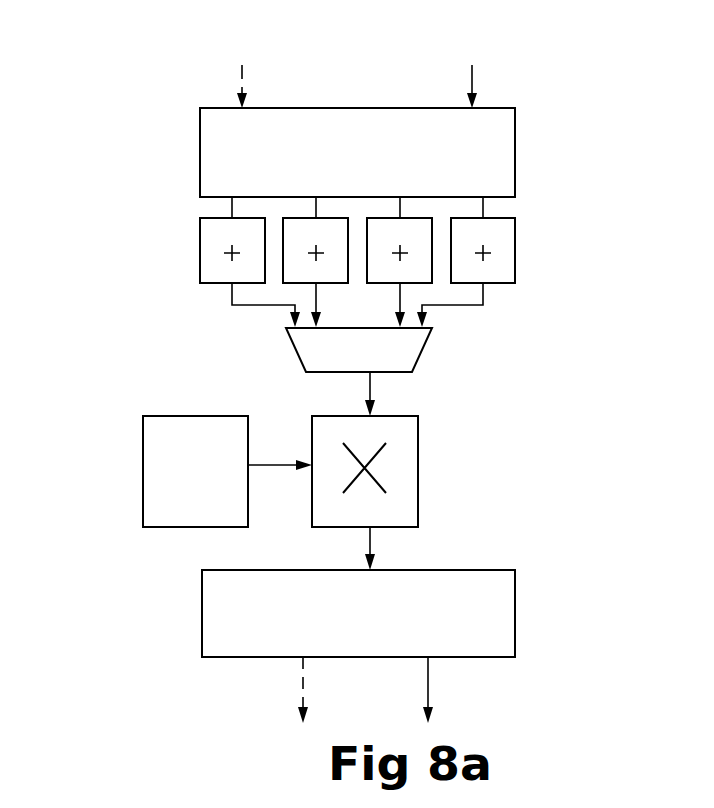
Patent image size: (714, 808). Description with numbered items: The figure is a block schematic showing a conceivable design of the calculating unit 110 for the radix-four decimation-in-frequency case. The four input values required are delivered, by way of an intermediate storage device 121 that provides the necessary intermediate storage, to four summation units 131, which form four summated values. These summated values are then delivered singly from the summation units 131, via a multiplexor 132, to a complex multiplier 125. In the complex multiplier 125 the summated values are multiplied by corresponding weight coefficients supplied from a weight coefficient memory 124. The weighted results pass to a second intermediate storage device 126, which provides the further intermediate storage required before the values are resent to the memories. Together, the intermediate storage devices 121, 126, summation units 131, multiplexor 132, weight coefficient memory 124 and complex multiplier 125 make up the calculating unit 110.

The calculating unit 110 is at (132, 47).
The intermediate storage device 121 is at (200, 163).
The summation units 131 is at (201, 220).
The multiplexor 132 is at (295, 344).
The weight coefficient memory 124 is at (143, 476).
The complex multiplier 125 is at (418, 477).
The intermediate storage device 126 is at (515, 590).